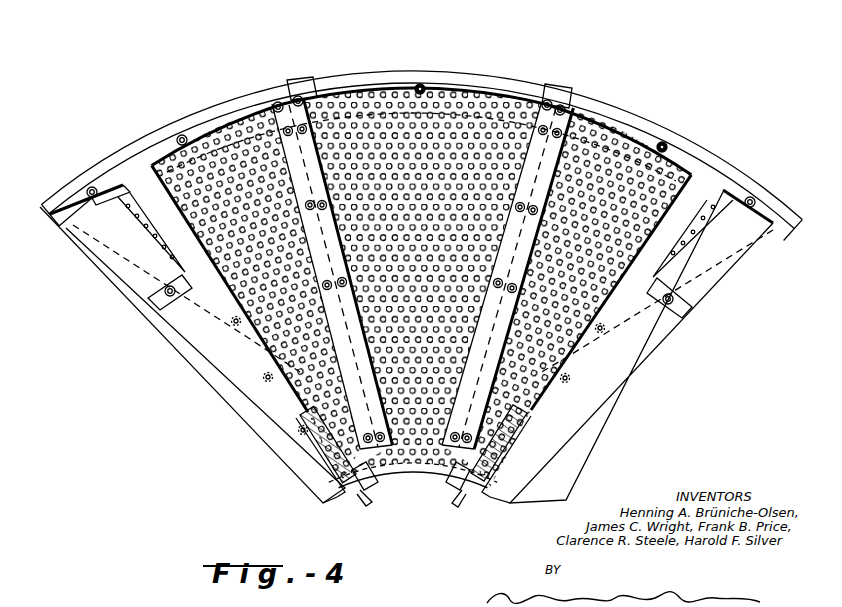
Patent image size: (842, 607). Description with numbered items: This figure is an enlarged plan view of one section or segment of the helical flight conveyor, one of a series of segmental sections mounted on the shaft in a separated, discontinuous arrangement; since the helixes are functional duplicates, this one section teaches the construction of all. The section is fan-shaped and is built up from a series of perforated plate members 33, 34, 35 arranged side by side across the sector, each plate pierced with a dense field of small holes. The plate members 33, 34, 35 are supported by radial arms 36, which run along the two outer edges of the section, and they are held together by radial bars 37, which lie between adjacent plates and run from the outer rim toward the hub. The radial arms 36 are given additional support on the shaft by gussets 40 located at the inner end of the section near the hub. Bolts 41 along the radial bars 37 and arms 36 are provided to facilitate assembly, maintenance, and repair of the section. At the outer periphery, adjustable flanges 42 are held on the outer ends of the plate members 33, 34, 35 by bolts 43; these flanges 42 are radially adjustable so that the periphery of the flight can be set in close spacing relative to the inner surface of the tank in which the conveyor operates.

The perforated plate member 33 is at (244, 102).
The perforated plate member 34 is at (533, 90).
The perforated plate member 35 is at (633, 131).
The radial arm 36 is at (282, 398).
The radial bar 37 is at (302, 100).
The gusset 40 is at (358, 493).
The bolt 41 is at (316, 222).
The adjustable flange 42 is at (418, 80).
The bolt 43 is at (185, 134).